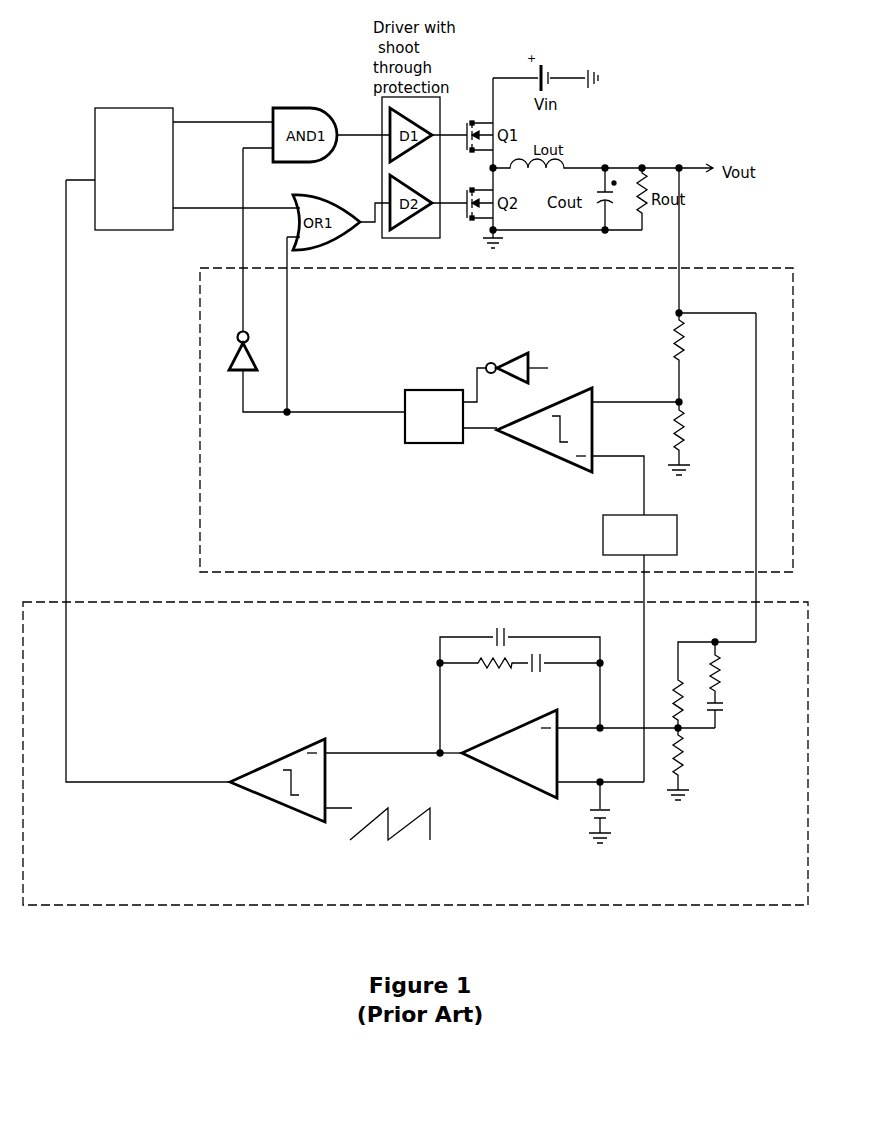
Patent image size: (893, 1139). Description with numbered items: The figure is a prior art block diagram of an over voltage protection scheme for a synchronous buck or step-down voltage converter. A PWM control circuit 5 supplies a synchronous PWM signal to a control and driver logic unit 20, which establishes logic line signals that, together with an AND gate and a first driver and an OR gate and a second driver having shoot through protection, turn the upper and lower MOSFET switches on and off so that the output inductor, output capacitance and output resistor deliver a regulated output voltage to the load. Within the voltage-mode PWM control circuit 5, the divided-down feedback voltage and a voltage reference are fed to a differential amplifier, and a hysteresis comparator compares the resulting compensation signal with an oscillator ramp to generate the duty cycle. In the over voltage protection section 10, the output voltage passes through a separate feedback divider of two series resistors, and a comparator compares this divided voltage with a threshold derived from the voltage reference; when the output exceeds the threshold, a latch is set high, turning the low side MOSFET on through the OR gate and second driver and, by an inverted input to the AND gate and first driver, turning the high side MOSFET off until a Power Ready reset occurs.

The control and driver logic unit 20 is at (134, 169).
The over voltage protection section 10 is at (231, 566).
The PWM control circuit 5 is at (43, 893).